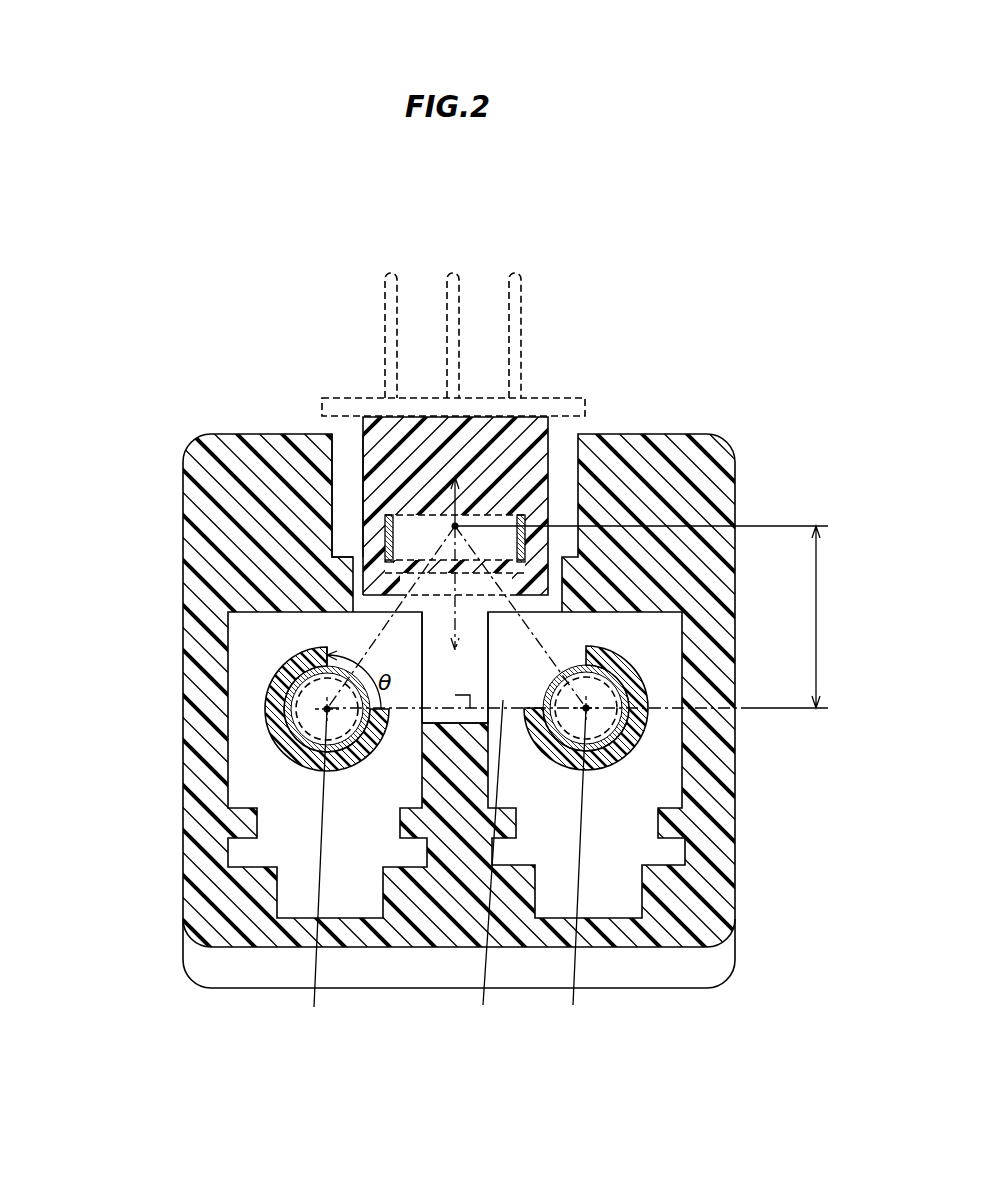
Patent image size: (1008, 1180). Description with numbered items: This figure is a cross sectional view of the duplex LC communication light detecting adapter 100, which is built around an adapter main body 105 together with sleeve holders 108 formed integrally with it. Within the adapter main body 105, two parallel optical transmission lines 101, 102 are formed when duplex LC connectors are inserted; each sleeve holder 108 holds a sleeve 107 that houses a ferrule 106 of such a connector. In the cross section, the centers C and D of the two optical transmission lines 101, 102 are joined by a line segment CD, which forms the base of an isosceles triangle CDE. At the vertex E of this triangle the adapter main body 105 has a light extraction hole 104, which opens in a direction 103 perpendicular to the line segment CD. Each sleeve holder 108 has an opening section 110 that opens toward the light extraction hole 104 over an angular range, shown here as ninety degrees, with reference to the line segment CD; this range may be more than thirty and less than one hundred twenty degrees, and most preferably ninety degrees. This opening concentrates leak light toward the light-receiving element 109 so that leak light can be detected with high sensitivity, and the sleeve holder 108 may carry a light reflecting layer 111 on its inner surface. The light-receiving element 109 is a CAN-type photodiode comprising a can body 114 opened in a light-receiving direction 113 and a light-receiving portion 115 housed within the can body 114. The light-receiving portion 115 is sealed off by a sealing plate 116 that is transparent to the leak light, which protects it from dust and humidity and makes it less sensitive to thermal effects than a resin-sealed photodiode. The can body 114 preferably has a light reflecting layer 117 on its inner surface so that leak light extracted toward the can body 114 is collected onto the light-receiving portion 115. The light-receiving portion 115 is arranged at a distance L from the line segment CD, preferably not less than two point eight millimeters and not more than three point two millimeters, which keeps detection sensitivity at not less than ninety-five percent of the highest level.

The duplex LC communication light detecting adapter 100 is at (136, 422).
The optical transmission line 101 is at (322, 712).
The optical transmission line 102 is at (600, 712).
The direction 103 is at (503, 493).
The light extraction hole 104 is at (331, 467).
The adapter main body 105 is at (737, 822).
The ferrule 106 is at (637, 735).
The sleeve 107 is at (622, 685).
The sleeve holder 108 is at (287, 718).
The light-receiving element 109 is at (598, 389).
The opening section 110 is at (328, 648).
The light reflecting layer 111 is at (267, 701).
The light-receiving direction 113 is at (445, 654).
The can body 114 is at (362, 495).
The light-receiving portion 115 is at (455, 526).
The sealing plate 116 is at (527, 539).
The light reflecting layer 117 is at (387, 553).
The vertex E is at (455, 526).
The distance L is at (649, 617).
The center C is at (314, 1023).
The center D is at (574, 1023).
The line segment CD is at (485, 868).
The isosceles triangle CDE is at (559, 638).